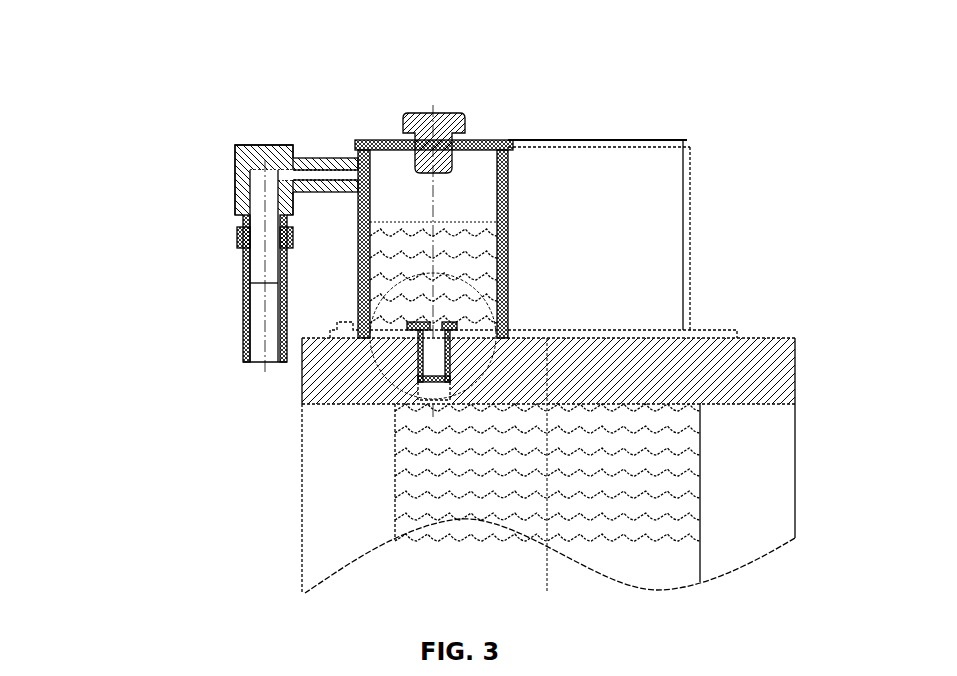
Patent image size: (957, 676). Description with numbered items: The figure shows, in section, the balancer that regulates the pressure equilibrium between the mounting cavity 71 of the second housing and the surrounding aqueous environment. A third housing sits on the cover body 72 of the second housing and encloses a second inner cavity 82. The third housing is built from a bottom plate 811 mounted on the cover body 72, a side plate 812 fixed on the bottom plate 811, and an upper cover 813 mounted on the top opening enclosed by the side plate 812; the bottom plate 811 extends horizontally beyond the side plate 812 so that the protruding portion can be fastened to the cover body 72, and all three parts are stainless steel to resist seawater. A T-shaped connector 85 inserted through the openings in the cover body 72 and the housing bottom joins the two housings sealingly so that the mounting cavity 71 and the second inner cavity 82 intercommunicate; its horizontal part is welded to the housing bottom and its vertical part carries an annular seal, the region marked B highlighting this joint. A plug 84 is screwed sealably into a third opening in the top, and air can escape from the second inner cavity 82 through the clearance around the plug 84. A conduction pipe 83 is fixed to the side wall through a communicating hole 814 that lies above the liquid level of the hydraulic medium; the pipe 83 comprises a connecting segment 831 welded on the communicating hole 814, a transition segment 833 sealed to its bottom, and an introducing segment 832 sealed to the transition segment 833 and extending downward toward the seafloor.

The mounting cavity 71 is at (451, 469).
The cover body 72 is at (743, 369).
The second inner cavity 82 is at (438, 186).
The conduction pipe 83 is at (103, 197).
The plug 84 is at (434, 127).
The connector 85 is at (416, 351).
The bottom plate 811 is at (694, 325).
The side plate 812 is at (656, 262).
The upper cover 813 is at (688, 139).
The communicating hole 814 is at (363, 168).
The connecting segment 831 is at (283, 167).
The introducing segment 832 is at (239, 307).
The transition segment 833 is at (285, 226).
The detail region B is at (393, 400).